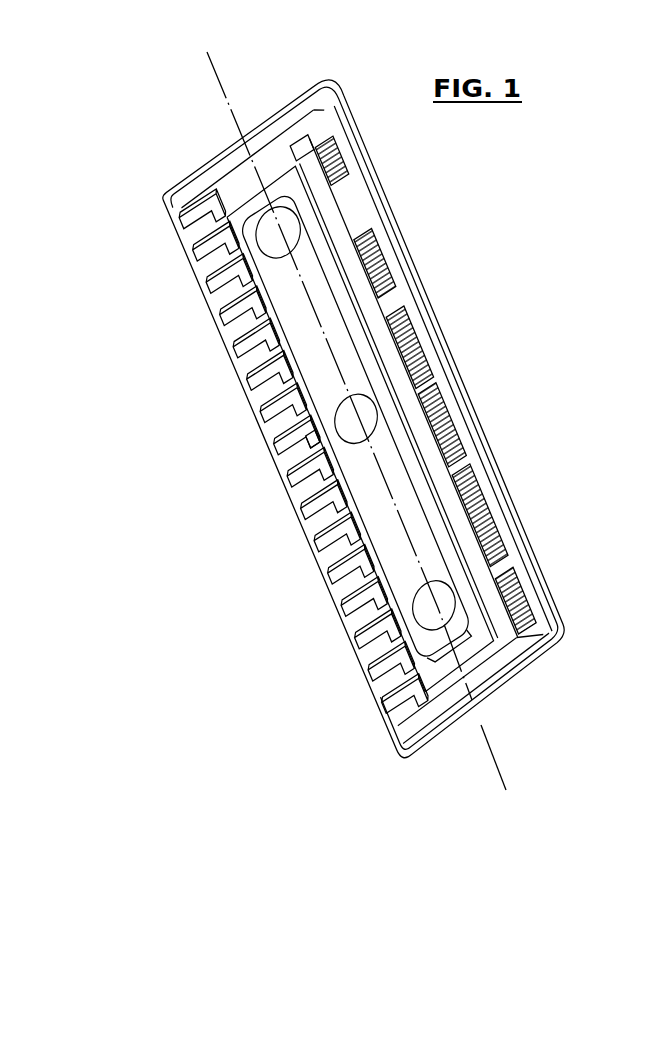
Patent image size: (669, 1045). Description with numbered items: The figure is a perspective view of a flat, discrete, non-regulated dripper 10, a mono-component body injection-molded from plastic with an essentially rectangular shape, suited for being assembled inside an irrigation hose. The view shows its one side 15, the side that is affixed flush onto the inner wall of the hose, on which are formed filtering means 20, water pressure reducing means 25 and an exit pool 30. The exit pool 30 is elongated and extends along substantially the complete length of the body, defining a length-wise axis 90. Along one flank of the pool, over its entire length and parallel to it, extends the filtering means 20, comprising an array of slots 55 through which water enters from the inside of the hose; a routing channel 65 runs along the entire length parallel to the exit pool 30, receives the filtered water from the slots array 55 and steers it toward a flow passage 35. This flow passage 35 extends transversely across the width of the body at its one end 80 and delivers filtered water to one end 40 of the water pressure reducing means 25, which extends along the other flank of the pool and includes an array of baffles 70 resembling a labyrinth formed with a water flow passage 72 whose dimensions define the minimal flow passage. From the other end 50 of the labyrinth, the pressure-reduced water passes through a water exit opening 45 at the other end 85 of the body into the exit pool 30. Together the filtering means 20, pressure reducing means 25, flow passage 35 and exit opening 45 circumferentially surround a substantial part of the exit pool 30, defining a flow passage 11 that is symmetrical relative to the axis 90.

The non-regulated dripper 10 is at (485, 365).
The flow passage 11 is at (543, 627).
The one side 15 is at (410, 540).
The filtering means 20 is at (487, 553).
The water pressure reducing means 25 is at (290, 452).
The exit pool 30 is at (320, 315).
The flow passage 35 is at (296, 160).
The one end of the water pressure reducing means 40 is at (200, 210).
The water exit opening 45 is at (393, 713).
The other end of the water pressure reducing means 50 is at (398, 700).
The array of slots 55 is at (500, 580).
The routing channel 65 is at (375, 327).
The array of baffles 70 is at (286, 472).
The water flow passage 72 is at (307, 492).
The one end of the dripper's body component 80 is at (197, 165).
The other end of the dripper's body component 85 is at (438, 752).
The length-wise axis 90 is at (493, 748).